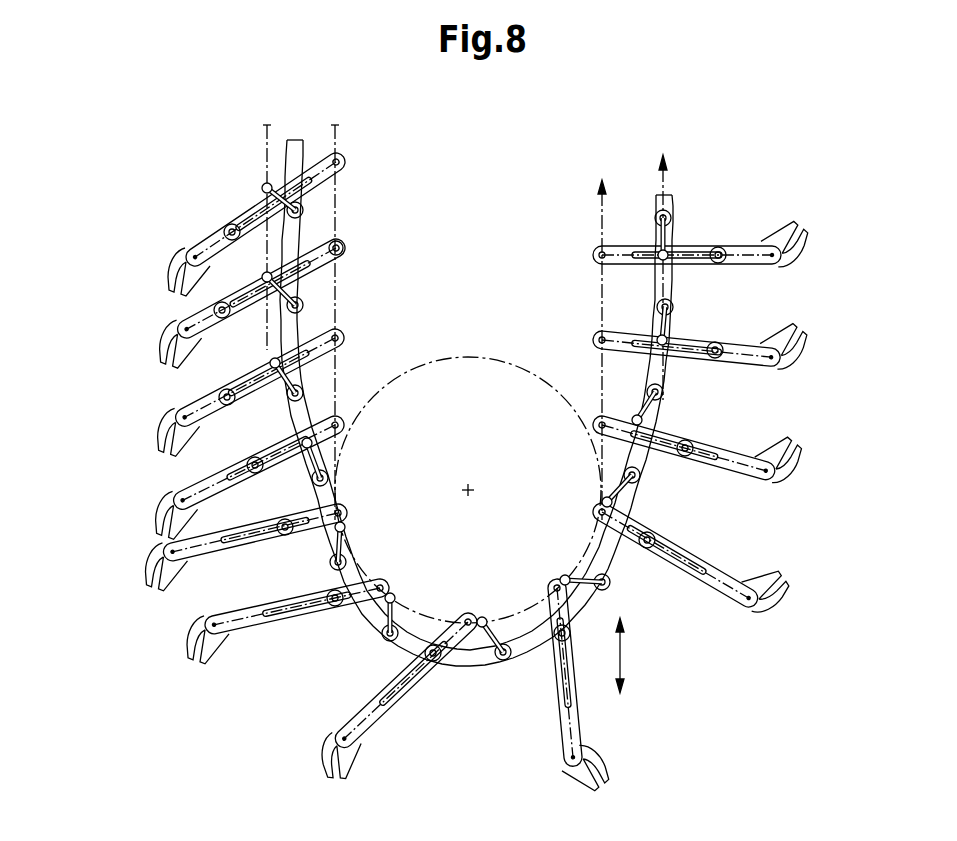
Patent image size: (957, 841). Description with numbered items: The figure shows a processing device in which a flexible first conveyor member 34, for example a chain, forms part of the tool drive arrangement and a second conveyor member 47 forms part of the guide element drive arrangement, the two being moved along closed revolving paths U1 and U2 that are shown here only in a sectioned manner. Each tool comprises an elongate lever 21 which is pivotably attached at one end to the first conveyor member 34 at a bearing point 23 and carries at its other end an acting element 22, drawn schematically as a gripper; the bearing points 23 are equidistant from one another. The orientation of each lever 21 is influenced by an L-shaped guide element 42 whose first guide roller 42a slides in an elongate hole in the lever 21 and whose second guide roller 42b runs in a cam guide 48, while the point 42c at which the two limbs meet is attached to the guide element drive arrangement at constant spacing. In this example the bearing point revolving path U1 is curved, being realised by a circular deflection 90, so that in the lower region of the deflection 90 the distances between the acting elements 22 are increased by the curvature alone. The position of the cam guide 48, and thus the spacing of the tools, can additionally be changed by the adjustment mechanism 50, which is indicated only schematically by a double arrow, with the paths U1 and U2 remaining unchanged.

The elongate lever 21 is at (330, 260).
The acting element 22 is at (186, 254).
The bearing point 23 is at (340, 246).
The first conveyor member 34 is at (336, 198).
The guide element 42 is at (261, 180).
The first guide roller 42a is at (231, 226).
The second guide roller 42b is at (303, 215).
The point where the limbs meet 42c is at (272, 180).
The second conveyor member 47 is at (267, 155).
The cam guide 48 is at (370, 628).
The adjustment mechanism 50 is at (621, 650).
The circular deflection 90 is at (560, 522).
The revolving path U1 is at (602, 215).
The revolving path U2 is at (664, 185).